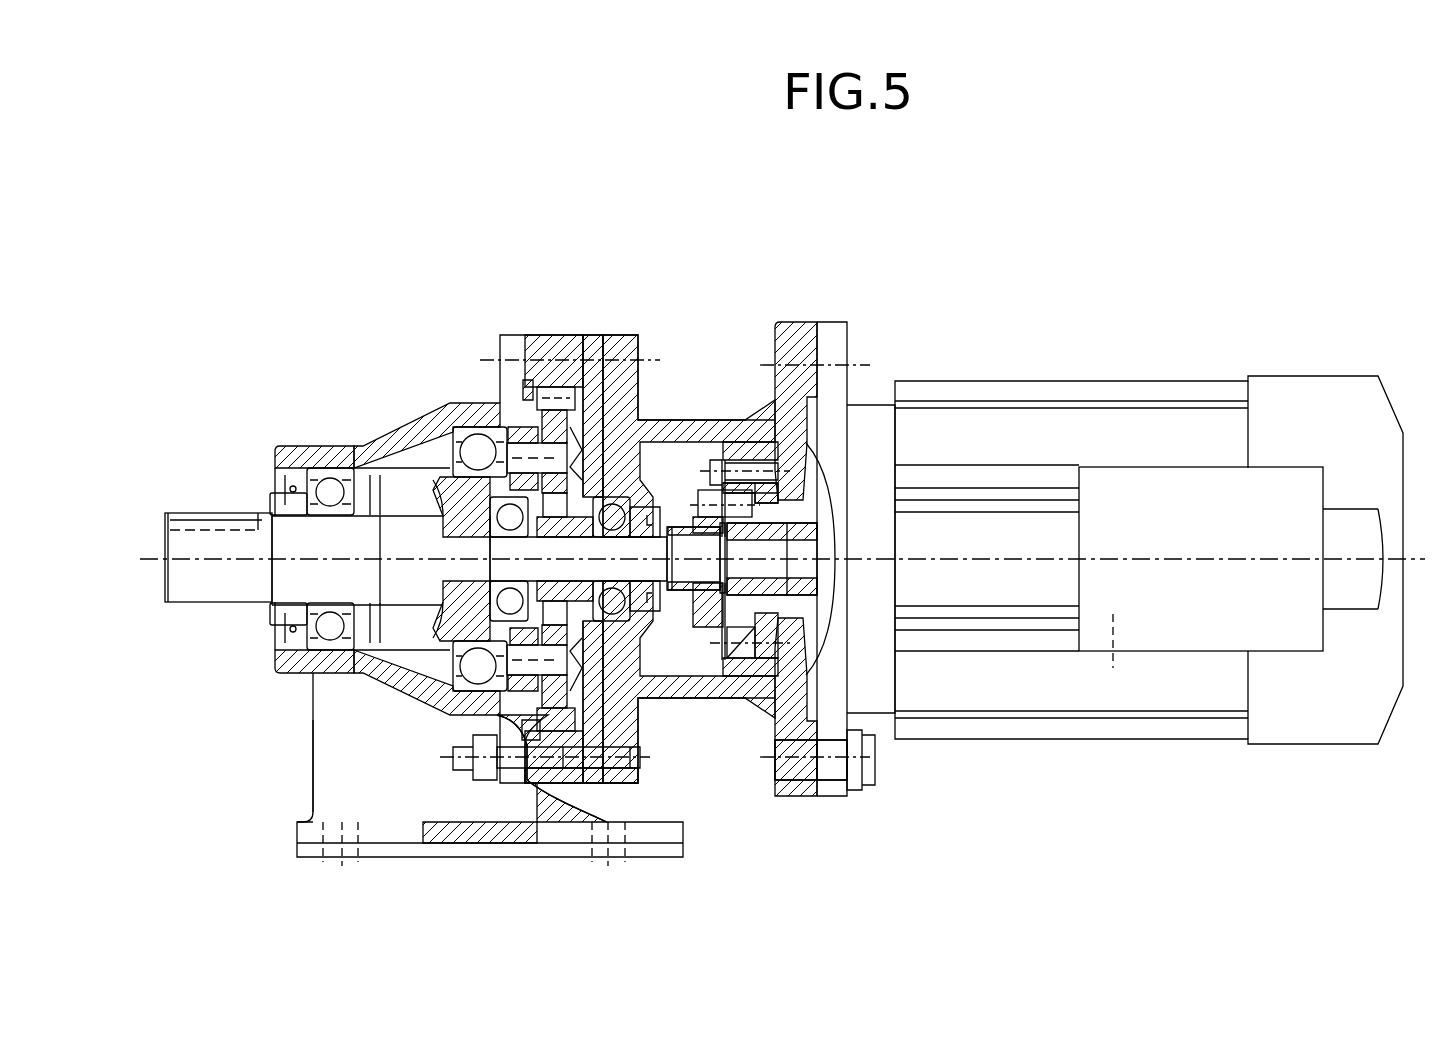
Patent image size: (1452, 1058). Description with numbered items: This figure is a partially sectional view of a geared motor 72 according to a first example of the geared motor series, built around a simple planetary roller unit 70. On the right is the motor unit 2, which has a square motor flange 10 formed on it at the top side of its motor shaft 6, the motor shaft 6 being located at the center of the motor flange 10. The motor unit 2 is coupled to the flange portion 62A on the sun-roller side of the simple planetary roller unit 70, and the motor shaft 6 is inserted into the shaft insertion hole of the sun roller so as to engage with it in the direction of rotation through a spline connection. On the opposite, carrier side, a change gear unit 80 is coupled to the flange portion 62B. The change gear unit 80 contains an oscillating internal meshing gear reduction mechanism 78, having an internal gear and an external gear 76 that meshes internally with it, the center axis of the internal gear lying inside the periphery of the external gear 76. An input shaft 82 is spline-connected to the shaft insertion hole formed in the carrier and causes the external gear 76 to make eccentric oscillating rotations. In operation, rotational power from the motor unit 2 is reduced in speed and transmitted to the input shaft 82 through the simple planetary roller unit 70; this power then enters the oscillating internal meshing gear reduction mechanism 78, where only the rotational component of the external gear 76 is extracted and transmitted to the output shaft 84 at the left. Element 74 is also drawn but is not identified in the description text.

The motor unit 2 is at (1158, 380).
The motor shaft 6 is at (807, 551).
The motor flange 10 is at (852, 782).
The flange portion 62A is at (795, 322).
The flange portion 62B is at (622, 335).
The simple planetary roller unit 70 is at (716, 318).
The geared motor 72 is at (1013, 262).
The countershaft 74 is at (538, 335).
The external gear 76 is at (542, 452).
The oscillating internal meshing gear reduction mechanism 78 is at (427, 640).
The change gear unit 80 is at (507, 255).
The input shaft 82 is at (590, 615).
The output shaft 84 is at (392, 525).